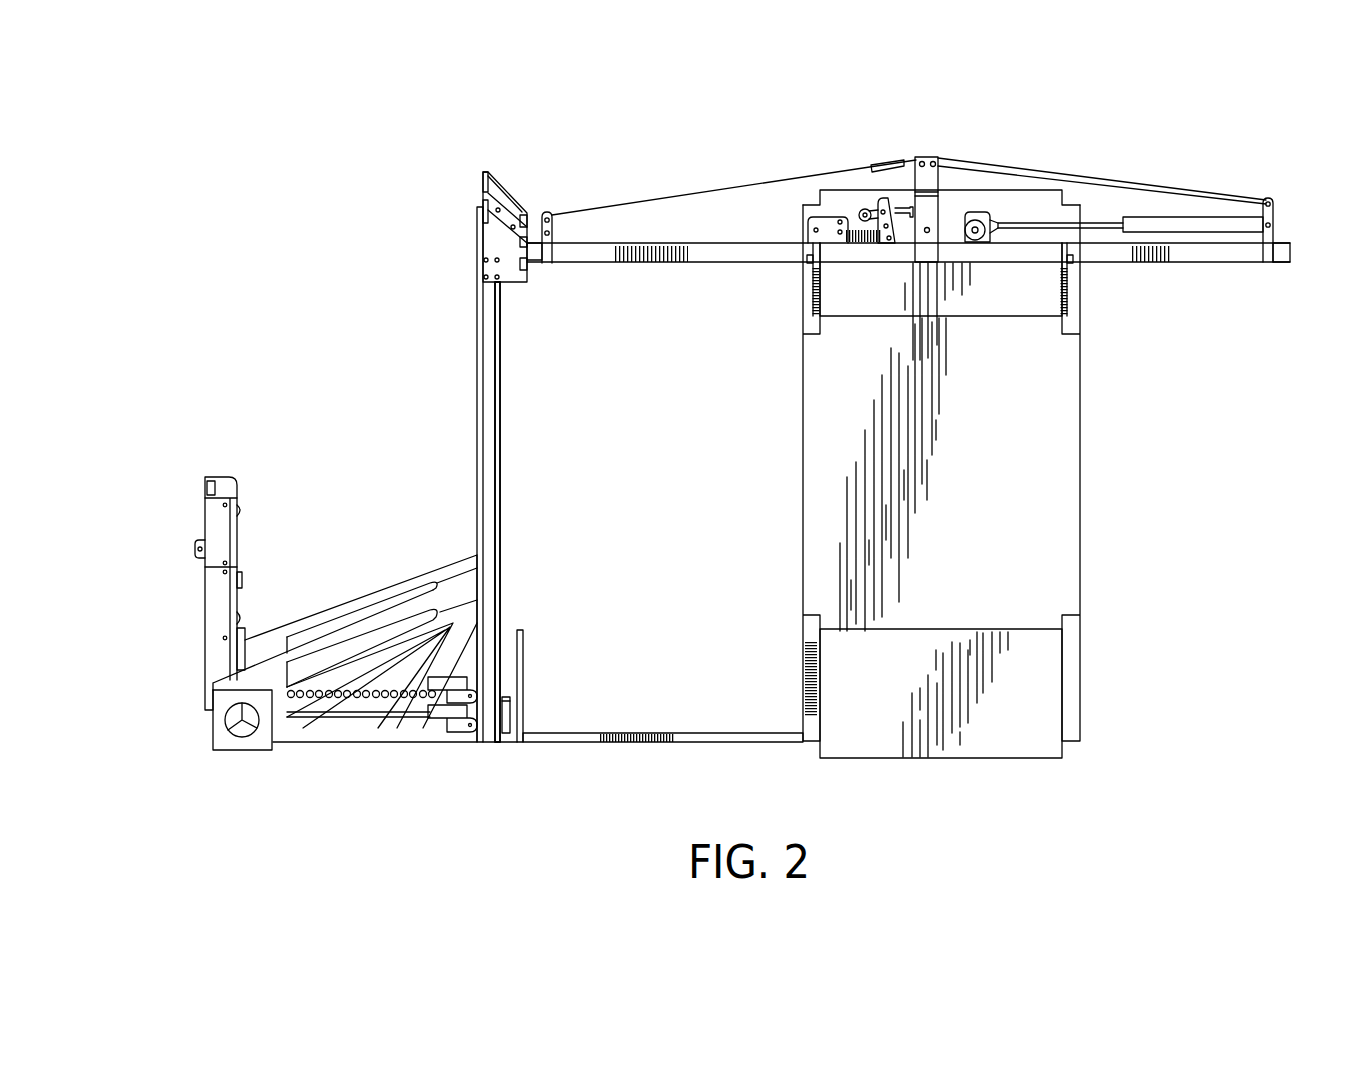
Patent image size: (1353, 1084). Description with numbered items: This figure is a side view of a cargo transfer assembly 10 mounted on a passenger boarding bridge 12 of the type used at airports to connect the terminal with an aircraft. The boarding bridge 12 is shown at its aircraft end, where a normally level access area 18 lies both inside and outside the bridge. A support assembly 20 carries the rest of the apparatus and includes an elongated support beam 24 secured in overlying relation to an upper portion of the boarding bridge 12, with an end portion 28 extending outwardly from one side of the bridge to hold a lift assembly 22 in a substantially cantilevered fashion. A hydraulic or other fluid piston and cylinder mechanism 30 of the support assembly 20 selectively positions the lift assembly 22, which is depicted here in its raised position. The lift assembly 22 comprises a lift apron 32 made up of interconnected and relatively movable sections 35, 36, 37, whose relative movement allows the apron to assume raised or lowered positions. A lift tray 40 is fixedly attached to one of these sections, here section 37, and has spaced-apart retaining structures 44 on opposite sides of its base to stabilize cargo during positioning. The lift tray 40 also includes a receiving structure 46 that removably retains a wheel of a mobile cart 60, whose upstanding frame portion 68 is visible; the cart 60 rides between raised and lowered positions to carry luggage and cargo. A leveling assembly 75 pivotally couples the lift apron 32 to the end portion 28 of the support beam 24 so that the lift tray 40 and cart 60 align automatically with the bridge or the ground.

The transfer assembly 10 is at (652, 153).
The passenger boarding bridge 12 is at (1105, 485).
The level access area 18 is at (627, 716).
The support assembly 20 is at (1040, 150).
The lift assembly 22 is at (440, 192).
The elongated support beam 24 is at (988, 258).
The outwardly extending end portion of the support beam 28 is at (580, 263).
The piston and cylinder mechanism 30 is at (1180, 205).
The lift apron 32 is at (512, 435).
The lift apron section 35 is at (512, 488).
The lift apron section 36 is at (497, 512).
The lift apron section 37 is at (497, 512).
The lift tray 40 is at (422, 565).
The retaining structures 44 is at (352, 603).
The receiving structure 46 is at (258, 750).
The mobile cart 60 is at (195, 465).
The upstanding frame portion 68 is at (197, 523).
The leveling assembly 75 is at (538, 268).